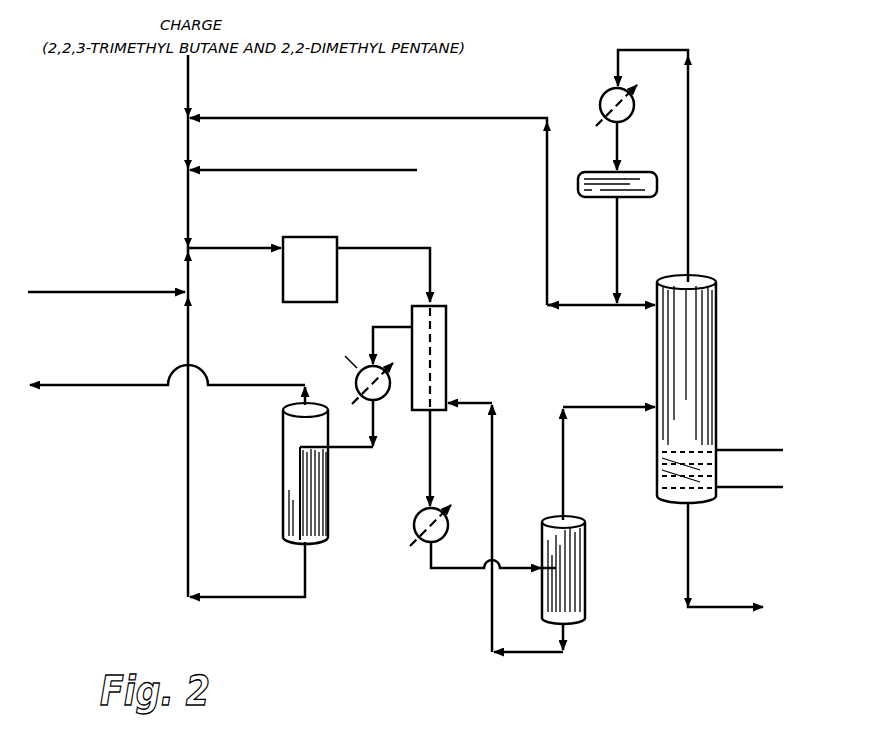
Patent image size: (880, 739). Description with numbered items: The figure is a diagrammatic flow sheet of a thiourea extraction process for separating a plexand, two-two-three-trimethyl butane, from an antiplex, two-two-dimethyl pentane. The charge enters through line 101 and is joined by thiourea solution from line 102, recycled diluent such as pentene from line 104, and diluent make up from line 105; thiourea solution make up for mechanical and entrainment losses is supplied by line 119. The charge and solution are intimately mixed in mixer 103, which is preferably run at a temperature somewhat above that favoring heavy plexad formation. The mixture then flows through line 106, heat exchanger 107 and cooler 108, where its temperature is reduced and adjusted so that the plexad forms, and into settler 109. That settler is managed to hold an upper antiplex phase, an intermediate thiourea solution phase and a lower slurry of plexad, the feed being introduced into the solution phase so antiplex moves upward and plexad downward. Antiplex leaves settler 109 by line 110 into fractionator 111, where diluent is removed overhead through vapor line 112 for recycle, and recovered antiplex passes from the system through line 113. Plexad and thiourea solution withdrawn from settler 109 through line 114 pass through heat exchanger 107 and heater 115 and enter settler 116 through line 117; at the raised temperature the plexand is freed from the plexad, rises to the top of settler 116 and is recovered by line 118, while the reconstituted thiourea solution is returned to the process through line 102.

The charge line 101 is at (186, 79).
The thiourea solution return line 102 is at (245, 594).
The mixer 103 is at (310, 269).
The diluent return line 104 is at (415, 114).
The diluent make up line 105 is at (415, 166).
The mixture line 106 is at (378, 244).
The heat exchanger 107 is at (448, 355).
The cooler 108 is at (440, 534).
The settler 109 is at (541, 540).
The antiplex line 110 is at (630, 403).
The fractionator 111 is at (655, 339).
The vapor line 112 is at (690, 214).
The antiplex product line 113 is at (738, 602).
The plexad and thiourea solution line 114 is at (530, 649).
The heater 115 is at (381, 400).
The settler 116 is at (281, 450).
The settler inlet line 117 is at (370, 430).
The plexand product line 118 is at (245, 382).
The thiourea solution make up line 119 is at (95, 297).